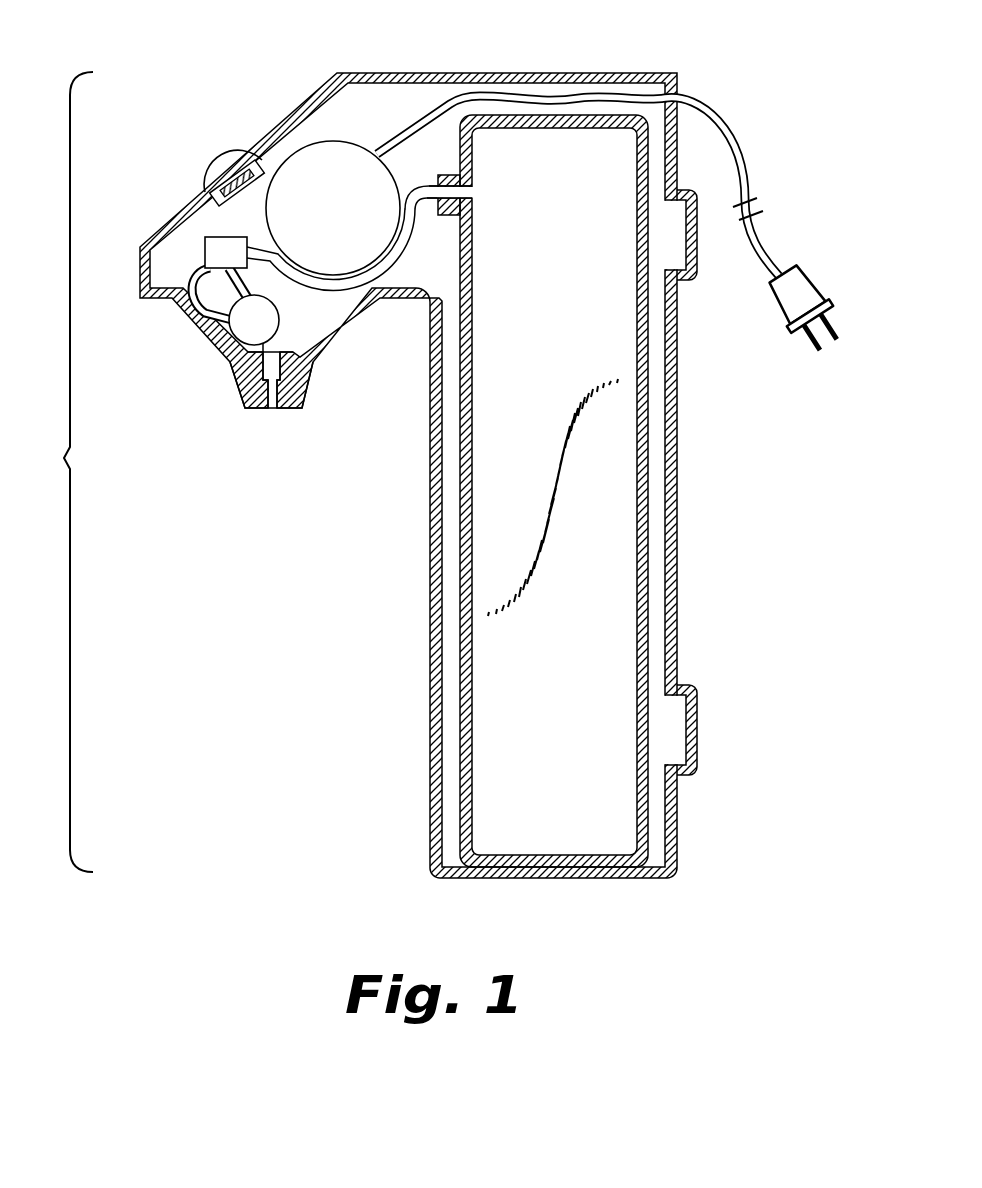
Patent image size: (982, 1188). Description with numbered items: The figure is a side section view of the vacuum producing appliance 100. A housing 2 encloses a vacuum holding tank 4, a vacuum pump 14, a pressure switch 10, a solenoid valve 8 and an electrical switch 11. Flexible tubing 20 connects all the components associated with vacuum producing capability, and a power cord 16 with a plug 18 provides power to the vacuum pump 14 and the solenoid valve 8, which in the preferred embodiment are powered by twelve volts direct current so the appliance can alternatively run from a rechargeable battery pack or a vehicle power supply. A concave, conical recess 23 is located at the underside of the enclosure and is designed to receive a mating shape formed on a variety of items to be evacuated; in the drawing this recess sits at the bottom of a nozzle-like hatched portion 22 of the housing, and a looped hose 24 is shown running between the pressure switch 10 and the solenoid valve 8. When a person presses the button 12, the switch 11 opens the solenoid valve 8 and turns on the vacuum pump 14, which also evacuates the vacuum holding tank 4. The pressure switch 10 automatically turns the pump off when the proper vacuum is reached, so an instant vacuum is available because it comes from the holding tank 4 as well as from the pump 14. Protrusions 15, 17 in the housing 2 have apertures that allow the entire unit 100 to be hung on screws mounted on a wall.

The vacuum producing appliance 100 is at (56, 472).
The housing 2 is at (430, 521).
The vacuum holding tank 4 is at (612, 588).
The solenoid valve 8 is at (213, 340).
The pressure switch 10 is at (220, 243).
The electrical switch 11 is at (245, 173).
The button 12 is at (217, 167).
The vacuum pump 14 is at (320, 162).
The protrusion 15 is at (696, 724).
The power cord 16 is at (733, 128).
The protrusion 17 is at (697, 240).
The plug 18 is at (803, 300).
The flexible tubing 20 is at (421, 192).
The nozzle 22 is at (318, 364).
The concave, conical recess 23 is at (265, 398).
The hose 24 is at (187, 268).